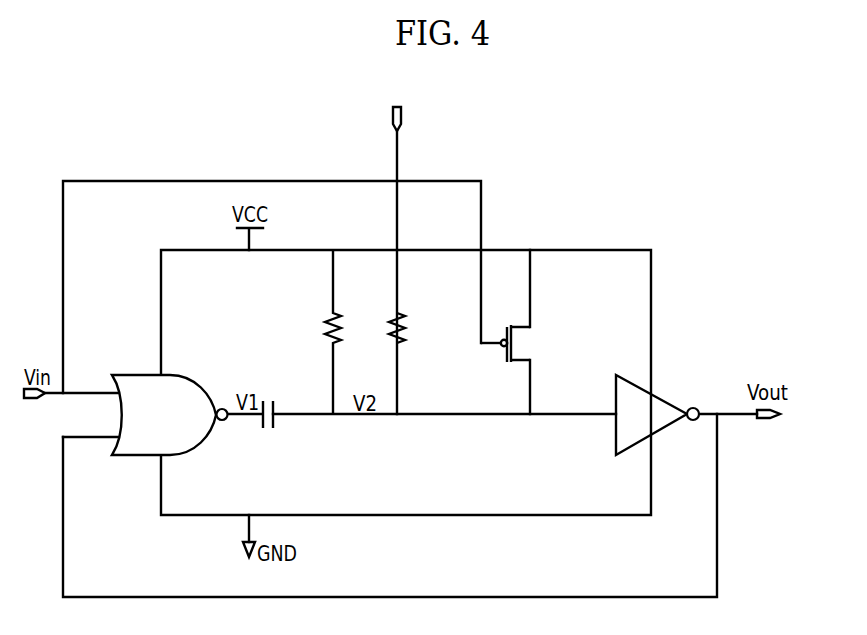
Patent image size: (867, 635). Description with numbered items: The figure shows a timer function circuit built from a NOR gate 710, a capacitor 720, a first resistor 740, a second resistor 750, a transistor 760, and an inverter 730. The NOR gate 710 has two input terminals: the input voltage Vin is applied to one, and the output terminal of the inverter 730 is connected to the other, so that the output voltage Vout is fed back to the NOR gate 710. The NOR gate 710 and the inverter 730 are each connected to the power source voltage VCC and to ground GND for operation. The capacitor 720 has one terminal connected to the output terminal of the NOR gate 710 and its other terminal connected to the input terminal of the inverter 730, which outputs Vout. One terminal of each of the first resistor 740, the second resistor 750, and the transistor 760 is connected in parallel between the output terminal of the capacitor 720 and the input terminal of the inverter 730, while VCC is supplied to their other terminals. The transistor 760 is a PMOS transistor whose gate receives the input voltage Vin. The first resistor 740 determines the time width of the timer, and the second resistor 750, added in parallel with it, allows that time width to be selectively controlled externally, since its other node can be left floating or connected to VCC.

The NOR gate 710 is at (181, 378).
The capacitor 720 is at (281, 424).
The inverter 730 is at (655, 396).
The first resistor 740 is at (336, 312).
The second resistor 750 is at (400, 312).
The transistor 760 is at (504, 353).